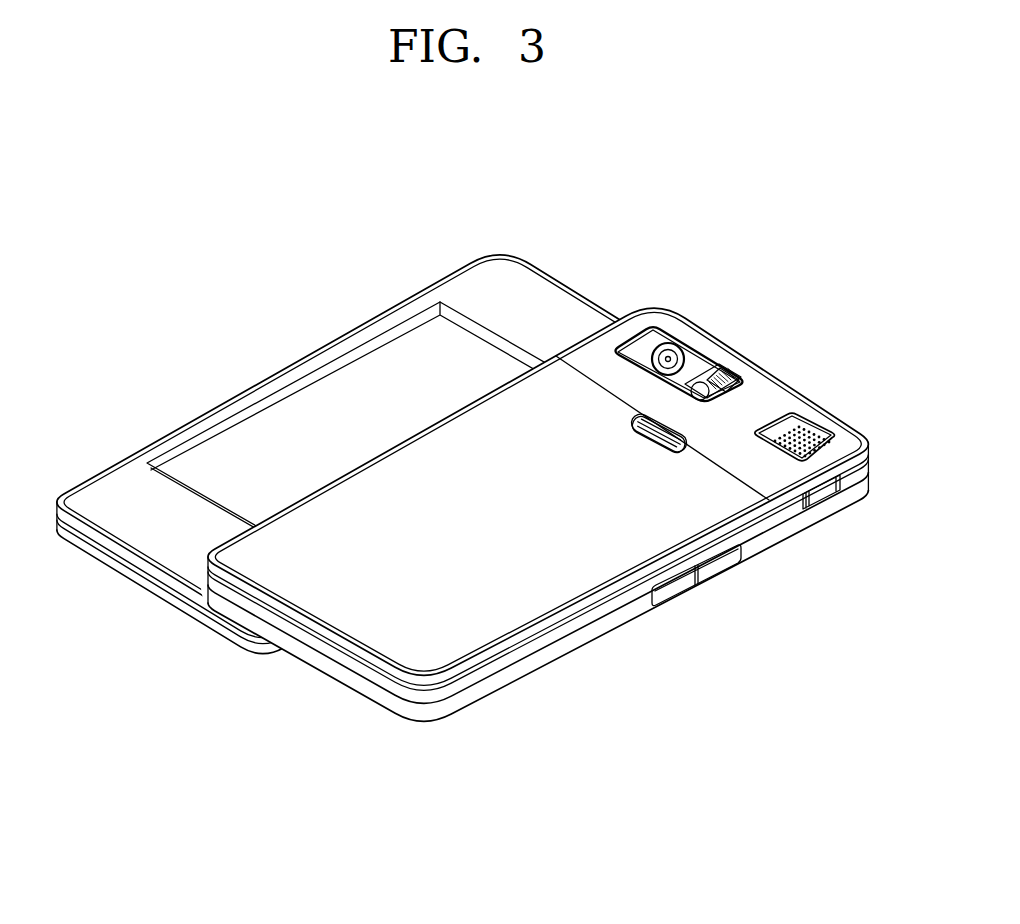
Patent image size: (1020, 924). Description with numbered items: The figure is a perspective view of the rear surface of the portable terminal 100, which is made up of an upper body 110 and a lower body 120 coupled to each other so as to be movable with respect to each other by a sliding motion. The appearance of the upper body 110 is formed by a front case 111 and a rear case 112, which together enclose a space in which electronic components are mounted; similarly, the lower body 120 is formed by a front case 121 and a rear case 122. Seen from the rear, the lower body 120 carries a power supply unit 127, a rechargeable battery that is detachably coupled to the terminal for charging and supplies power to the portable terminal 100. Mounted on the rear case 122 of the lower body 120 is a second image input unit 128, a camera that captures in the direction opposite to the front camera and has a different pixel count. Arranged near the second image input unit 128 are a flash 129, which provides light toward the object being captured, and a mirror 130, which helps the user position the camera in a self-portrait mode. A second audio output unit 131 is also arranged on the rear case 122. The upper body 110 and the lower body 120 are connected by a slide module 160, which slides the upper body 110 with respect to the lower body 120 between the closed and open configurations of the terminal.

The portable terminal 100 is at (333, 290).
The upper body 110 is at (379, 469).
The front case 111 is at (175, 606).
The rear case 112 is at (148, 580).
The lower body 120 is at (550, 504).
The front case 121 is at (603, 620).
The rear case 122 is at (550, 635).
The power supply unit 127 is at (467, 648).
The second image input unit 128 is at (668, 359).
The flash 129 is at (727, 378).
The mirror 130 is at (700, 388).
The second audio output unit 131 is at (813, 424).
The slide module 160 is at (325, 387).